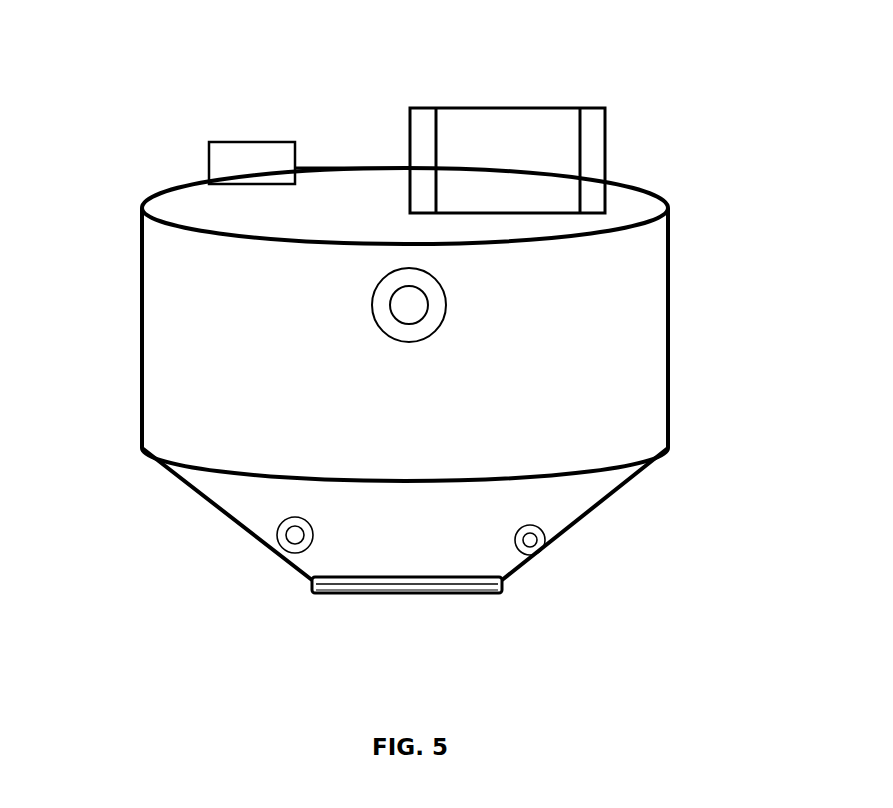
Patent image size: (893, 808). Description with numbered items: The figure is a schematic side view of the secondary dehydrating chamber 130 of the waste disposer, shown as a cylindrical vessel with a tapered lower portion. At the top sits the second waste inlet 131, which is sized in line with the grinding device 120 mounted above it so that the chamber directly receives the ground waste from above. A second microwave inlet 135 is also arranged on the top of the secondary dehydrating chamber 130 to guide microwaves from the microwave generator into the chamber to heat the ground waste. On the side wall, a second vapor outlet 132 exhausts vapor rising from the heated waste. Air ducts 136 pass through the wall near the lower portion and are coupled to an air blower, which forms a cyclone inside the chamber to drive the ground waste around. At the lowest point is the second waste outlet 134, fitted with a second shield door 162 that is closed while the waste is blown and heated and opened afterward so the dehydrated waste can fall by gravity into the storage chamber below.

The secondary dehydrating chamber 130 is at (134, 112).
The second waste inlet 131 is at (587, 215).
The second vapor outlet 132 is at (400, 307).
The second waste outlet 134 is at (502, 587).
The second microwave inlet 135 is at (258, 153).
The air ducts 136 is at (293, 535).
The grinding device 120 is at (524, 174).
The second shield door 162 is at (342, 593).